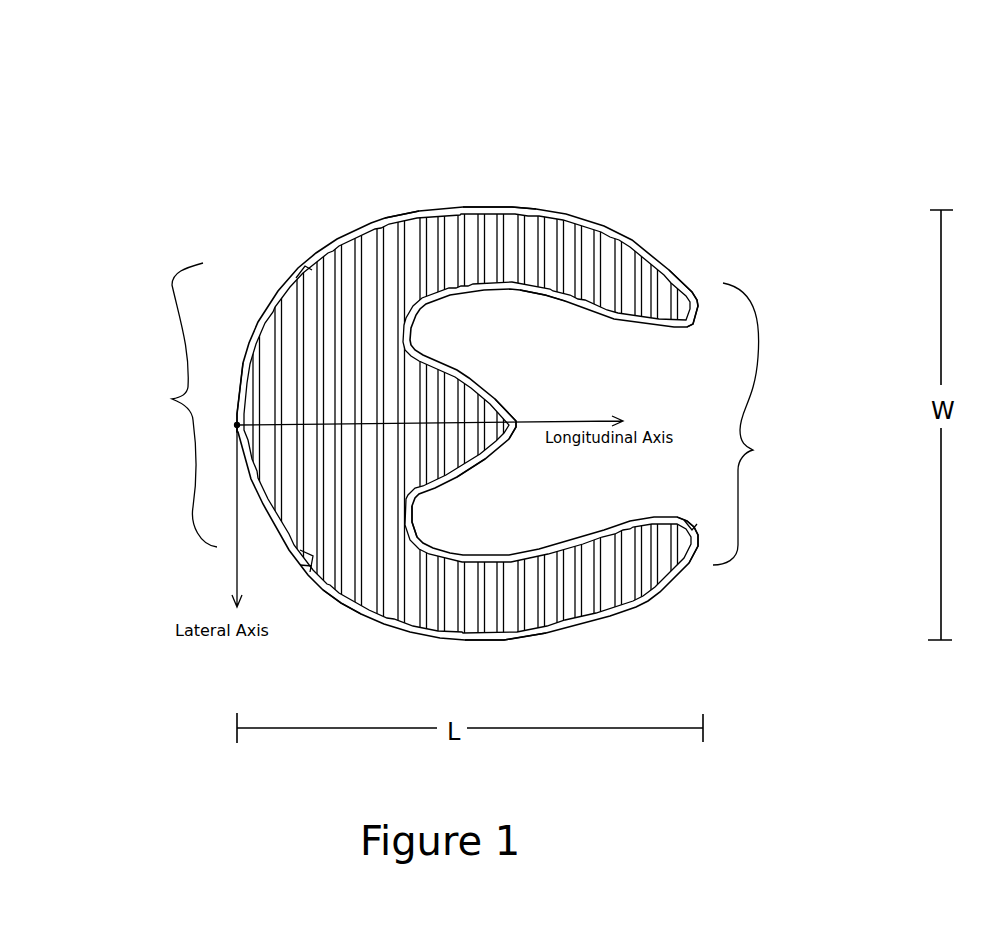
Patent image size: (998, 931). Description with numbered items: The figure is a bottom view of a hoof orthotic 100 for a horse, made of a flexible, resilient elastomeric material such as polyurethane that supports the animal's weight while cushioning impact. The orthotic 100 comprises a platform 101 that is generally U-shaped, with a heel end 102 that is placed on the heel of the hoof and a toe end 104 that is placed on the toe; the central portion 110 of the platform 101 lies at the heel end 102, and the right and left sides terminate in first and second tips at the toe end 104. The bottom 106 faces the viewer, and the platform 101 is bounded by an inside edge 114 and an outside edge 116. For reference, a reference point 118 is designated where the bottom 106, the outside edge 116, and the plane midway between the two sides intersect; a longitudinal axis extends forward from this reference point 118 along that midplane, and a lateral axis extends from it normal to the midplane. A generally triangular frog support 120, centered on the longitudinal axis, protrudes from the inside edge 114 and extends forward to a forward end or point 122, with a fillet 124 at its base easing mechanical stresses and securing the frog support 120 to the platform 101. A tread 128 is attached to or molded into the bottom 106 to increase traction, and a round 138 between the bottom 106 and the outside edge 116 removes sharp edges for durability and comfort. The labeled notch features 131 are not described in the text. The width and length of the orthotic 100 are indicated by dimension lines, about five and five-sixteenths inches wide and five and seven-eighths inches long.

The hoof orthotic 100 is at (575, 80).
The platform 101 is at (385, 622).
The heel end 102 is at (171, 399).
The toe end 104 is at (765, 424).
The bottom 106 is at (345, 255).
The central portion 110 is at (237, 392).
The inside edge 114 is at (538, 299).
The outside edge 116 is at (340, 605).
The reference point 118 is at (236, 426).
The frog support 120 is at (463, 453).
The forward end 122 is at (513, 418).
The fillet 124 is at (420, 517).
The tread 128 is at (403, 245).
The notch 131 is at (303, 272).
The round 138 is at (300, 544).